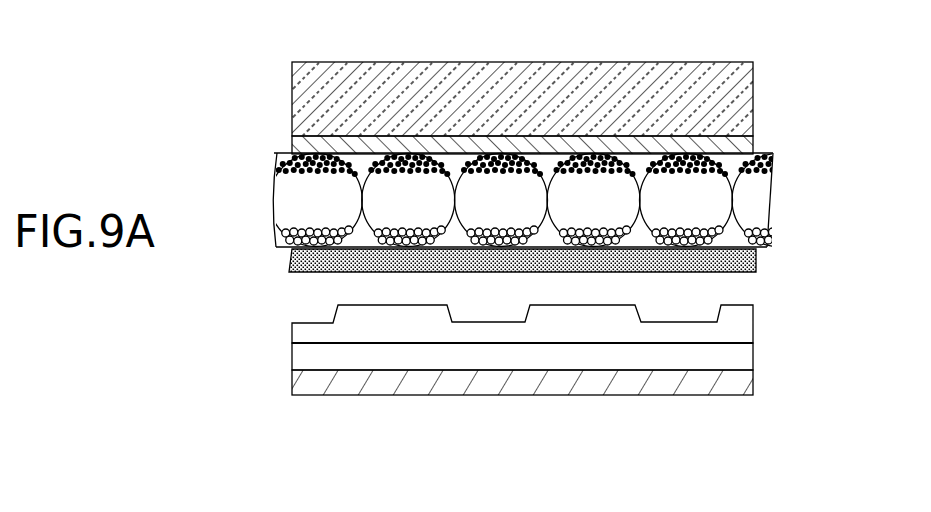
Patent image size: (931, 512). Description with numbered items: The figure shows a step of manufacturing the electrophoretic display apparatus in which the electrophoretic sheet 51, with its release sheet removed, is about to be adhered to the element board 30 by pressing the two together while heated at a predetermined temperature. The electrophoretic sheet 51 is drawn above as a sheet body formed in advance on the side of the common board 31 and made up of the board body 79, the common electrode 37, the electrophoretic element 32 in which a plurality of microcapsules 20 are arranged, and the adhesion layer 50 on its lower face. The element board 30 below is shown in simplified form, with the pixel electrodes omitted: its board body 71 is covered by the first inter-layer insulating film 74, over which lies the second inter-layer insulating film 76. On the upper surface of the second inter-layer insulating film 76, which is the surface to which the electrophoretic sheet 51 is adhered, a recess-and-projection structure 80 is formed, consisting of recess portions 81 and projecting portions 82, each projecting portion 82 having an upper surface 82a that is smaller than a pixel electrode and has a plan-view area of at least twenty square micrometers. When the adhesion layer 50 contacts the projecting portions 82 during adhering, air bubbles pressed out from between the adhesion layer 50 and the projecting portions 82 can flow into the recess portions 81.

The microcapsule 20 is at (455, 175).
The element board 30 is at (530, 350).
The common board 31 is at (561, 87).
The electrophoretic element 32 is at (282, 164).
The common electrode 37 is at (552, 148).
The adhesion layer 50 is at (292, 262).
The electrophoretic sheet 51 is at (552, 147).
The board body 71 is at (530, 386).
The first inter-layer insulating film 74 is at (305, 346).
The second inter-layer insulating film 76 is at (305, 323).
The board body 79 is at (638, 72).
The recess-and-projection structure 80 is at (393, 370).
The recess portion 81 is at (505, 314).
The projecting portion 82 is at (568, 300).
The upper surface 82a is at (348, 305).